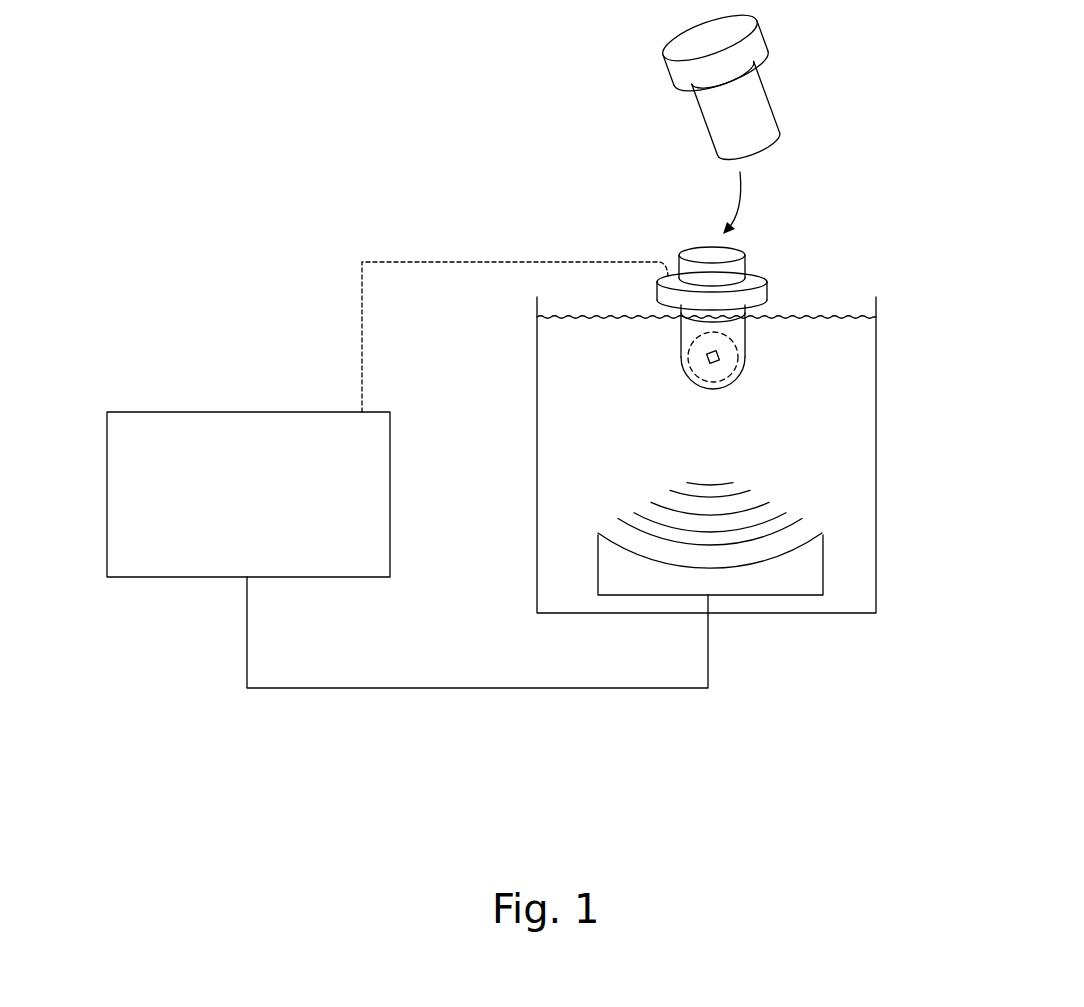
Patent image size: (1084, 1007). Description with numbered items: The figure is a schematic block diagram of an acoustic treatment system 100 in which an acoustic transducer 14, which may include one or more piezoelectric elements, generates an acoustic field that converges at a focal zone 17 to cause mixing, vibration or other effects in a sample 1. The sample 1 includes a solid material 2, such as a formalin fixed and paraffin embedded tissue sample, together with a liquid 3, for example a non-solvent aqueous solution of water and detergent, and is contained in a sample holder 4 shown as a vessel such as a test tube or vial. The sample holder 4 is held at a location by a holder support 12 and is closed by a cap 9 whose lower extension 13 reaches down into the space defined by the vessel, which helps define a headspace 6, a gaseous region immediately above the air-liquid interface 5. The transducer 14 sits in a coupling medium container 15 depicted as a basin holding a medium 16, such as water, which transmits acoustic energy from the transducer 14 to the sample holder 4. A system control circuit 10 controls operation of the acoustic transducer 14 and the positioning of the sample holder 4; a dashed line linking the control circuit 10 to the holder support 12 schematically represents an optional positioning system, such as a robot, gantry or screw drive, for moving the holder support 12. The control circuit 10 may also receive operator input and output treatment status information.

The acoustic treatment system 100 is at (214, 205).
The cap 9 is at (755, 38).
The extension 13 is at (762, 115).
The system control circuit 10 is at (107, 492).
The coupling medium container 15 is at (877, 458).
The medium 16 is at (855, 417).
The acoustic transducer 14 is at (790, 578).
The sample holder 4 is at (742, 255).
The headspace 6 is at (710, 248).
The holder support 12 is at (671, 300).
The air-liquid interface 5 is at (750, 333).
The focal zone 17 is at (700, 386).
The liquid 3 is at (737, 381).
The solid material 2 is at (707, 359).
The sample 1 is at (760, 355).